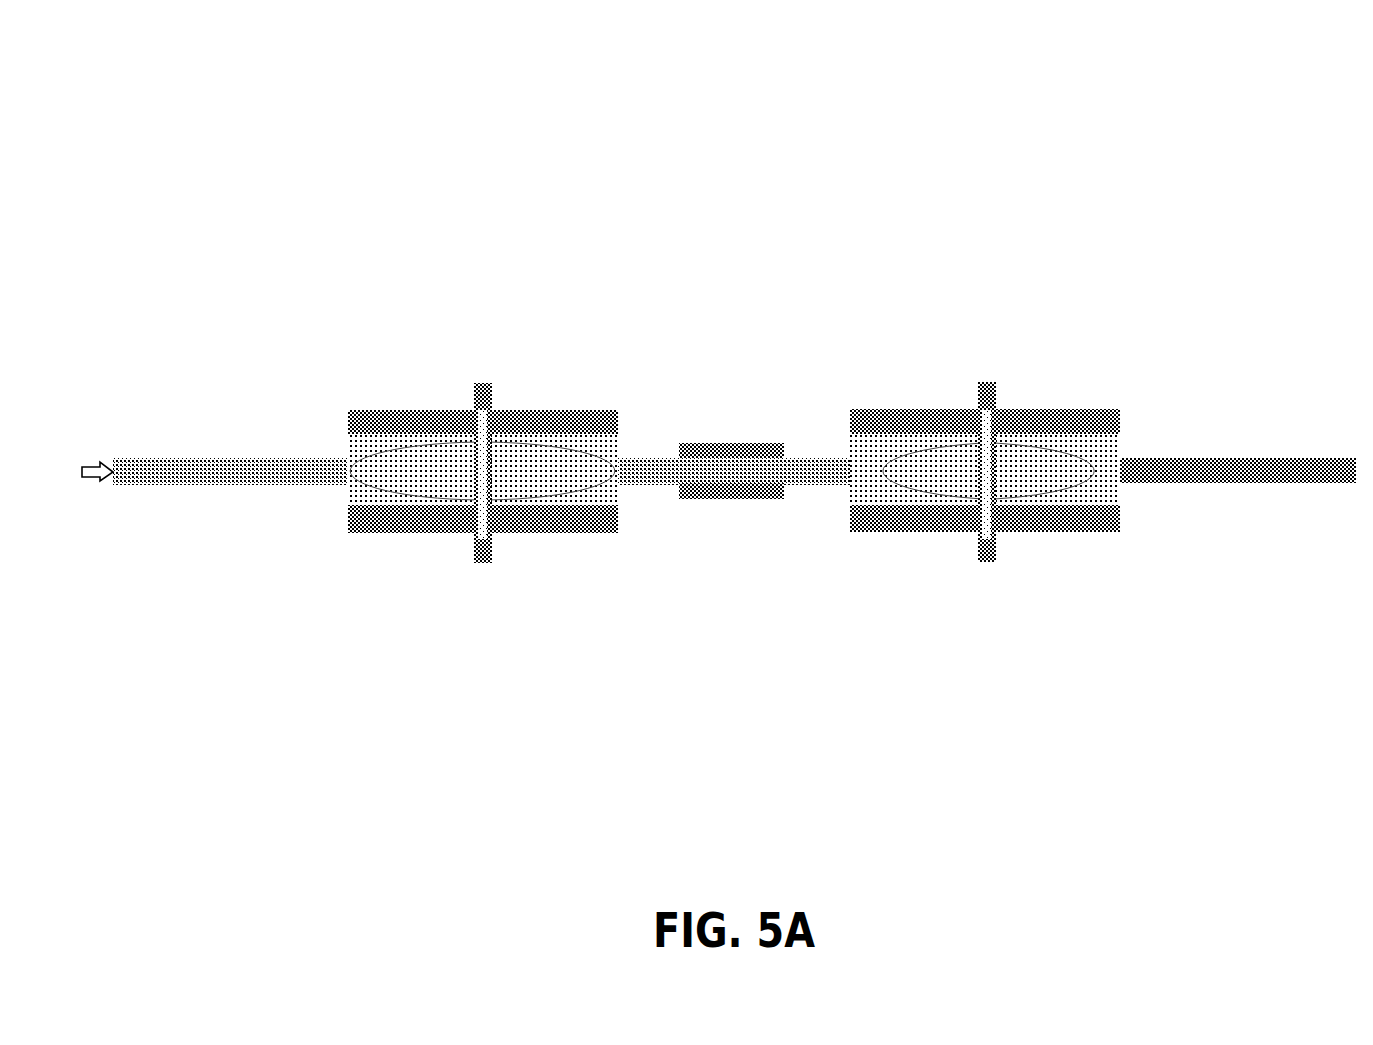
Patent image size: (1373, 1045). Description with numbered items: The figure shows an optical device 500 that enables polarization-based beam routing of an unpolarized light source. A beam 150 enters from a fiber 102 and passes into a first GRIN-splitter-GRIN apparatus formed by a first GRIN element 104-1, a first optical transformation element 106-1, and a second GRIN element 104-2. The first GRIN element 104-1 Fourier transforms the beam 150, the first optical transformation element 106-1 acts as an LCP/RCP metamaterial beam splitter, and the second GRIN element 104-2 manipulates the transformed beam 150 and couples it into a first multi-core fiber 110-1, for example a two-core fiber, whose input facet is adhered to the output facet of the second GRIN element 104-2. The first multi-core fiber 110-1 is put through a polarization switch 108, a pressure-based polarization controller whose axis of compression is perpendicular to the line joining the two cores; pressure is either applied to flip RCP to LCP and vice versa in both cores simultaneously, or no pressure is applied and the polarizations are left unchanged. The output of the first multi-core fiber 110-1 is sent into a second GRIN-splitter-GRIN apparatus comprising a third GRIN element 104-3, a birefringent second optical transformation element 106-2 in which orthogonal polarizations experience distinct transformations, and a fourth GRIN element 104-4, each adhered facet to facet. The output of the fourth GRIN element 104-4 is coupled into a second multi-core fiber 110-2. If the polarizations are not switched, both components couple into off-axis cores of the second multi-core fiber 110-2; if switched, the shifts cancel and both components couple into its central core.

The optical device 500 is at (218, 50).
The beam 150 is at (101, 465).
The fiber 102 is at (247, 468).
The first GRIN element 104-1 is at (418, 418).
The second GRIN element 104-2 is at (548, 418).
The third GRIN element 104-3 is at (921, 417).
The fourth GRIN element 104-4 is at (1052, 417).
The first optical transformation element 106-1 is at (483, 383).
The second optical transformation element 106-2 is at (988, 383).
The polarization switch 108 is at (731, 495).
The first multi-core fiber 110-1 is at (733, 468).
The second multi-core fiber 110-2 is at (1238, 465).